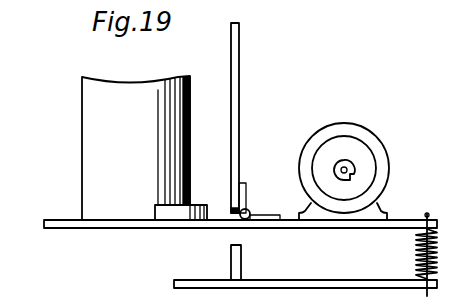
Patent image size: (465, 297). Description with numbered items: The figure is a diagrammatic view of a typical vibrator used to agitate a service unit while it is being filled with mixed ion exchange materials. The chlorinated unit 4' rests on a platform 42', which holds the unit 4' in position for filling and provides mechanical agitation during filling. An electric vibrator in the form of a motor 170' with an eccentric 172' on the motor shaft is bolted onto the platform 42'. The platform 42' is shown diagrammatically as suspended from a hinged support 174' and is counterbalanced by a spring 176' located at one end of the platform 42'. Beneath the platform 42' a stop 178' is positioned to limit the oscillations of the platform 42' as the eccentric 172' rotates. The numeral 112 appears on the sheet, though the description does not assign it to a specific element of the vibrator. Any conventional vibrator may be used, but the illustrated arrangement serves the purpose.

The apparatus 112 is at (451, 30).
The chlorinated unit 4' is at (126, 148).
The platform 42' is at (240, 237).
The hinged support 174' is at (263, 121).
The motor 170' is at (364, 164).
The eccentric 172' is at (349, 138).
The spring 176' is at (394, 254).
The stop 178' is at (301, 262).